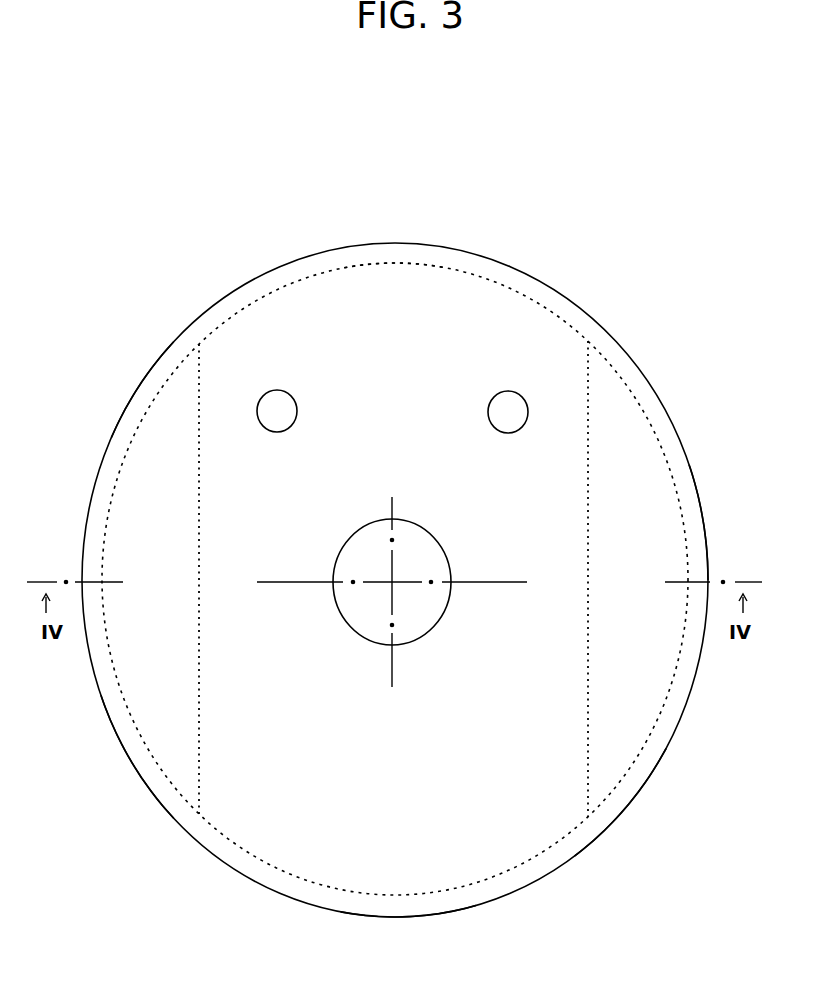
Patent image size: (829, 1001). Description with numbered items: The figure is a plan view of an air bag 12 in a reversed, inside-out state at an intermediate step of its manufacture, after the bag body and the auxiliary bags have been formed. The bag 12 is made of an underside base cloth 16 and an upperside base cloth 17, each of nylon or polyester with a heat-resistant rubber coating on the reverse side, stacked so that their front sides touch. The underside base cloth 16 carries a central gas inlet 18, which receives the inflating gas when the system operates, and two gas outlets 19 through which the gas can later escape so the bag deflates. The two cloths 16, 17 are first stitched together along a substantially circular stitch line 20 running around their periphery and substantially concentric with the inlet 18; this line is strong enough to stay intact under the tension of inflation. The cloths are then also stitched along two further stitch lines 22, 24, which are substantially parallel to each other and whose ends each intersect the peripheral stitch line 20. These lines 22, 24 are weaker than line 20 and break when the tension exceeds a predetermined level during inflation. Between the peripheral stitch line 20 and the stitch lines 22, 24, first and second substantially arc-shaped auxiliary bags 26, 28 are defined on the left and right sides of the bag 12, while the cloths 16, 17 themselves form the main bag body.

The bag 12 is at (613, 338).
The underside base cloth 16 is at (407, 277).
The upperside base cloth 17 is at (495, 300).
The gas inlet 18 is at (428, 633).
The gas outlets 19 is at (270, 392).
The stitch line 20 is at (330, 890).
The stitch line 22 is at (200, 733).
The stitch line 24 is at (588, 787).
The first auxiliary bag 26 is at (165, 397).
The second auxiliary bag 28 is at (672, 525).